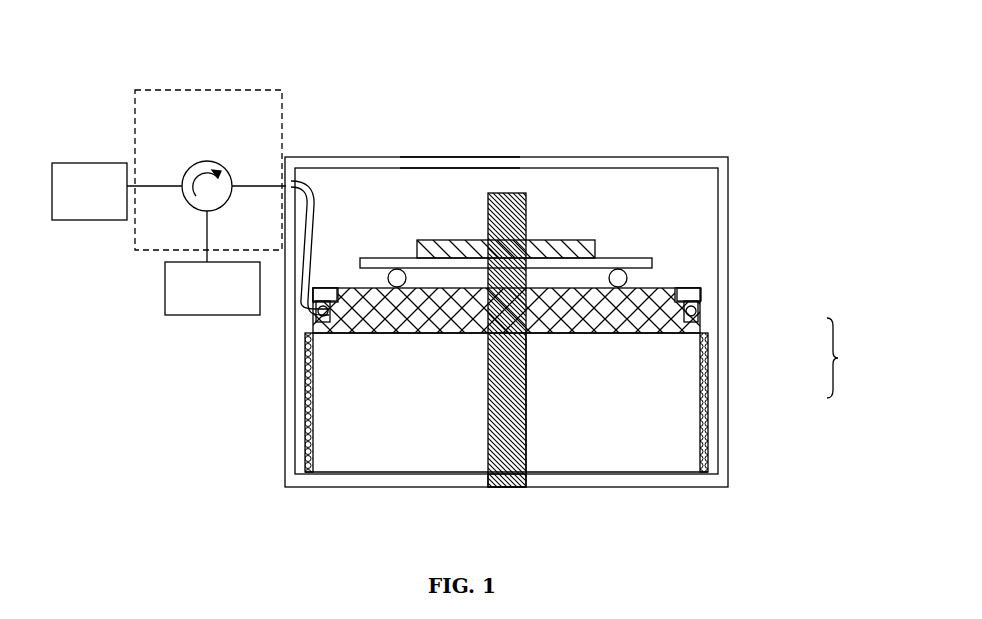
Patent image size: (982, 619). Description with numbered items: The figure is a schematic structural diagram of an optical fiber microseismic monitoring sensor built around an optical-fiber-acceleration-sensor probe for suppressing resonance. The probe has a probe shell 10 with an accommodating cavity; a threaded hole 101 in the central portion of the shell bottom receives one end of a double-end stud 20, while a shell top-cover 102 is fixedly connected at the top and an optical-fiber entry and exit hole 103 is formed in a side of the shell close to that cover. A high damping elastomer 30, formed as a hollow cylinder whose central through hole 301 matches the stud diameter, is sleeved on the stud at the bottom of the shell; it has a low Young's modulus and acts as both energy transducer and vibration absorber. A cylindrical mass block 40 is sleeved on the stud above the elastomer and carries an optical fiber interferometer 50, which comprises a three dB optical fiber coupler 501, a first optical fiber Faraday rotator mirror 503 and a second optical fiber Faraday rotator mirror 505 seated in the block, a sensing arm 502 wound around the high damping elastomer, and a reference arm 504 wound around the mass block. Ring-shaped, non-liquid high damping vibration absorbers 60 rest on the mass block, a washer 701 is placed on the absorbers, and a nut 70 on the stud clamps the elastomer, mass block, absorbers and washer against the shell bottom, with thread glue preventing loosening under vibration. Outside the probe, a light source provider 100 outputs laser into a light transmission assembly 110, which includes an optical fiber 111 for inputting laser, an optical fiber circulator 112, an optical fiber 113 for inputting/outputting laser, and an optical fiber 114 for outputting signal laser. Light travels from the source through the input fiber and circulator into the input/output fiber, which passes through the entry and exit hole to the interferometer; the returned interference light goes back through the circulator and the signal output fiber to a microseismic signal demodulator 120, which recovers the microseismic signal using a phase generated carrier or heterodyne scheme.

The probe shell 10 is at (290, 453).
The double-end stud 20 is at (517, 200).
The high damping elastomer 30 is at (343, 437).
The mass block 40 is at (397, 317).
The optical fiber interferometer 50 is at (838, 358).
The high damping vibration absorbers 60 is at (627, 277).
The nut 70 is at (595, 241).
The washer 701 is at (652, 258).
The light source provider 100 is at (82, 163).
The threaded hole 101 is at (527, 487).
The shell top-cover 102 is at (293, 183).
The optical-fiber entry and exit hole 103 is at (452, 165).
The light transmission assembly 110 is at (208, 88).
The optical fiber for inputting laser 111 is at (150, 186).
The optical fiber circulator 112 is at (212, 161).
The optical fiber for inputting/outputting laser 113 is at (260, 183).
The optical fiber for outputting signal laser 114 is at (208, 238).
The microseismic signal demodulator 120 is at (165, 292).
The through hole 301 is at (528, 382).
The 3 dB optical fiber coupler 501 is at (323, 317).
The sensing arm 502 is at (702, 393).
The first optical fiber Faraday rotator mirror 503 is at (695, 310).
The reference arm 504 is at (682, 301).
The second optical fiber Faraday rotator mirror 505 is at (687, 306).